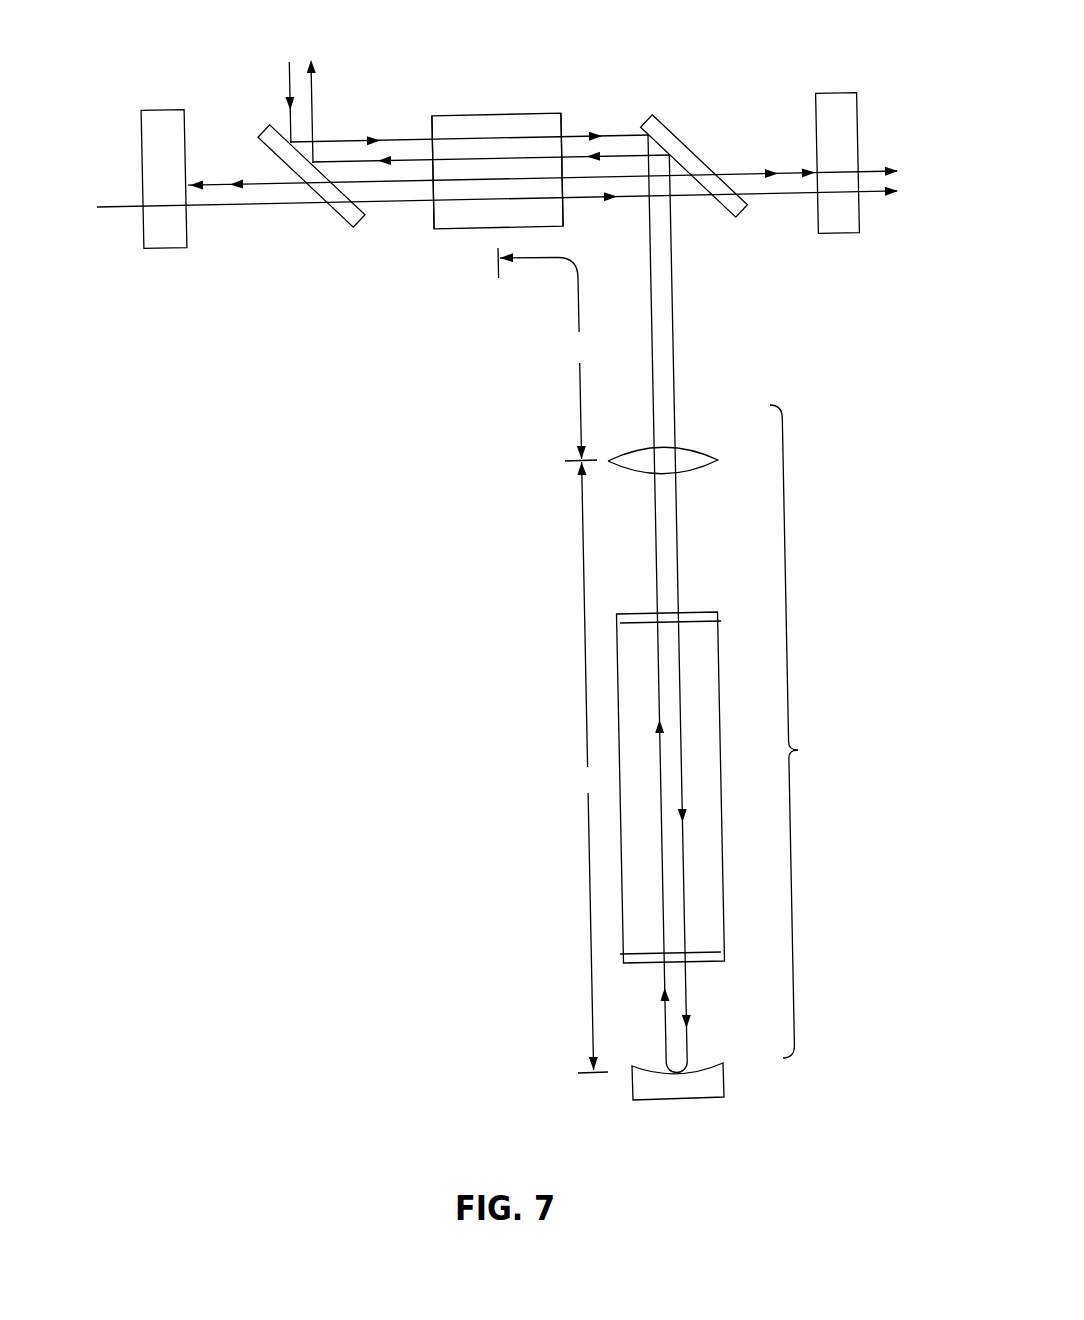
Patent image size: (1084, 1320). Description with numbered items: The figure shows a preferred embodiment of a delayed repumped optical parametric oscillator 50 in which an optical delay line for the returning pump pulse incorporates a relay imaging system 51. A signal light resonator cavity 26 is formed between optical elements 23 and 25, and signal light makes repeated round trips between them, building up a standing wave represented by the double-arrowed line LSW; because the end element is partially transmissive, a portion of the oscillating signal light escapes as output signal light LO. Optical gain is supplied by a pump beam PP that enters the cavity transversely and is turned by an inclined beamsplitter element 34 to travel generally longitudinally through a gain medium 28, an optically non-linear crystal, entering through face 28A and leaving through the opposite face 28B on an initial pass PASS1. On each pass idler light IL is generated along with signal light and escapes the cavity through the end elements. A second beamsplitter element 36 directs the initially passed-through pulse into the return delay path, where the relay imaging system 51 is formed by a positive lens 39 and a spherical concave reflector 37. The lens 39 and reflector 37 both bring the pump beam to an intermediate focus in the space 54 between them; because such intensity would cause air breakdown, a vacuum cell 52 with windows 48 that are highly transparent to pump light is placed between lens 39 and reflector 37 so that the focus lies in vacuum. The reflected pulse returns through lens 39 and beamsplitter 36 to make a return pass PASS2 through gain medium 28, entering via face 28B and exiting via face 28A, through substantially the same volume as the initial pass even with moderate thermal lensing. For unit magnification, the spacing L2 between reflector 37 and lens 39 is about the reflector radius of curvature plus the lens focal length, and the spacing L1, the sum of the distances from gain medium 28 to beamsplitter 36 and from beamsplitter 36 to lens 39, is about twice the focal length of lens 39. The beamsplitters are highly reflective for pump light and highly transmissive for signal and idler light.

The optical element 23 is at (163, 110).
The optical element 25 is at (837, 93).
The resonator cavity 26 is at (231, 174).
The gain medium 28 is at (515, 127).
The face of gain medium 28A is at (432, 127).
The opposite face of gain medium 28B is at (563, 122).
The beamsplitter element 34 is at (345, 208).
The beamsplitter element 36 is at (673, 128).
The reflector 37 is at (680, 1100).
The positive lens 39 is at (690, 447).
The windows 48 is at (698, 613).
The delayed repumped OPO 50 is at (343, 515).
The relay imaging system 51 is at (806, 731).
The vacuum cell 52 is at (722, 803).
The space 54 is at (714, 697).
The pump beam PP is at (288, 77).
The standing wave LSW is at (214, 188).
The output signal light LO is at (872, 167).
The idler light IL is at (875, 192).
The initial pass PASS1 is at (462, 137).
The return pass PASS2 is at (457, 138).
The spacing L1 is at (547, 354).
The spacing L2 is at (590, 767).